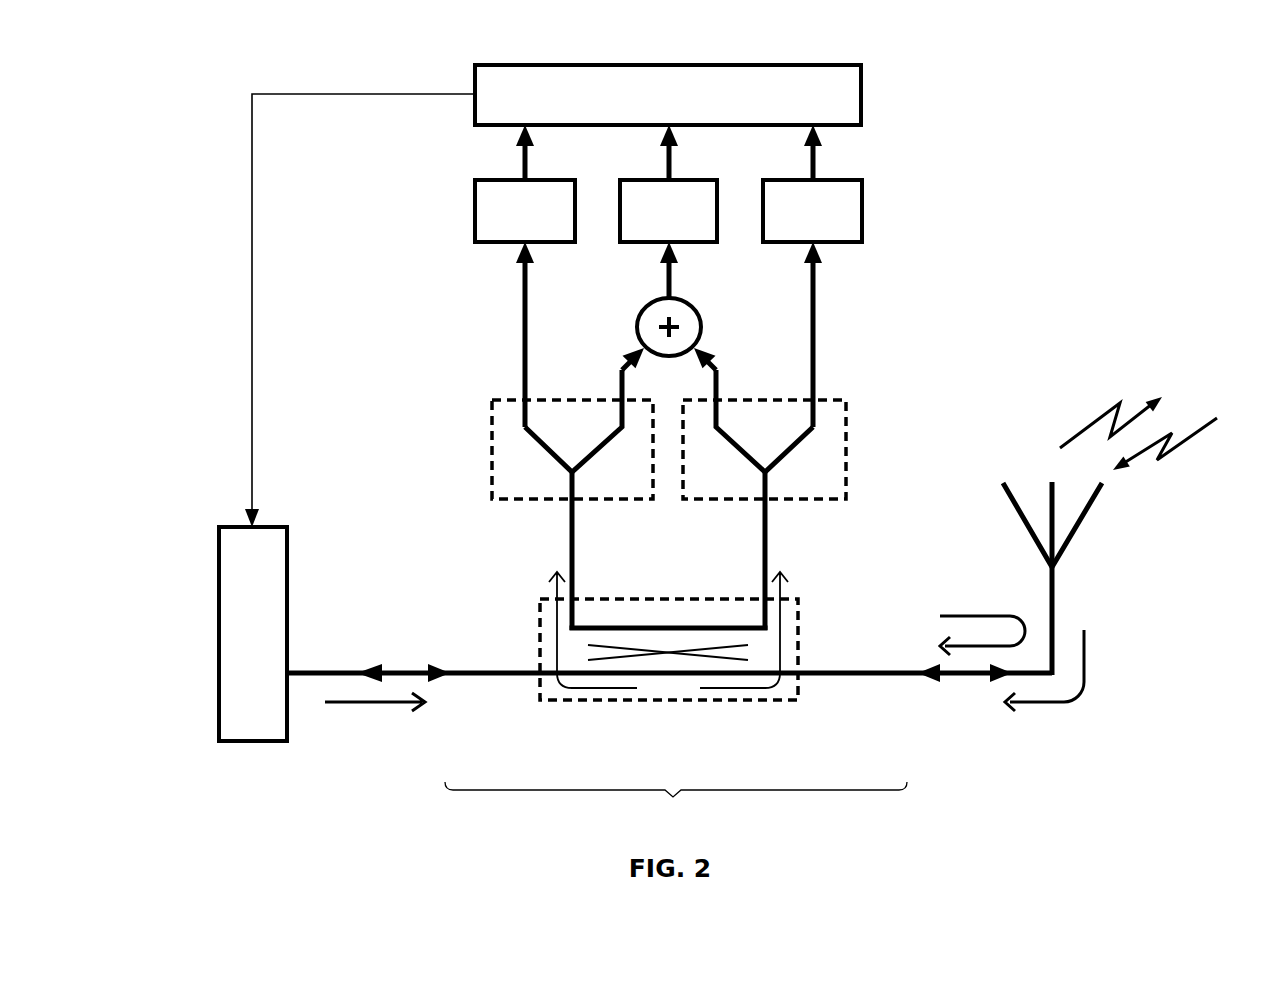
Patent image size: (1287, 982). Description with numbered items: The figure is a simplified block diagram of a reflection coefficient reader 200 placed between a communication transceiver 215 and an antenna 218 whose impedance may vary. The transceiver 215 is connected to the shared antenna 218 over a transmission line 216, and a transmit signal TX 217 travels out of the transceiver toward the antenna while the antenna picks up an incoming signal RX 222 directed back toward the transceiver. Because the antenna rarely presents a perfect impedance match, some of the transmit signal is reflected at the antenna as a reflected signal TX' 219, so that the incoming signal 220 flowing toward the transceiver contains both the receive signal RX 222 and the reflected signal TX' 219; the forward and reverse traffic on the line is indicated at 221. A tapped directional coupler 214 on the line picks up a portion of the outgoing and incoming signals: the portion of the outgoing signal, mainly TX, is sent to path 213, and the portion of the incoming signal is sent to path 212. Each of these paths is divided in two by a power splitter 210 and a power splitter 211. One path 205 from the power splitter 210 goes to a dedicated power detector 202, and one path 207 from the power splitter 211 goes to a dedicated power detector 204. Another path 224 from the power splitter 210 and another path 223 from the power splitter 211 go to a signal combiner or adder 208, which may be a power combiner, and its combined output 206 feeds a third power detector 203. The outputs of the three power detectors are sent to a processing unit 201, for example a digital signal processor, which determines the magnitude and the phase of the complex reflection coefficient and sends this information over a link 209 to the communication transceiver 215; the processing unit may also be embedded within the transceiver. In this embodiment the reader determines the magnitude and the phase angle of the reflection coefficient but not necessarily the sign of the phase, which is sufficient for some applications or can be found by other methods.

The reflection coefficient reader 200 is at (676, 807).
The processing unit 201 is at (861, 85).
The power detector 202 is at (475, 203).
The power detector 203 is at (718, 241).
The power detector 204 is at (862, 202).
The path 205 is at (522, 288).
The summed signal line 206 is at (663, 278).
The path 207 is at (813, 285).
The signal combiner 208 is at (637, 328).
The control line 209 is at (253, 327).
The power splitter 210 is at (492, 481).
The power splitter 211 is at (846, 472).
The path 212 is at (572, 530).
The path 213 is at (765, 532).
The tapped directional coupler 214 is at (553, 700).
The communication transceiver 215 is at (287, 543).
The transmission line 216 is at (410, 667).
The transmit signal TX 217 is at (333, 702).
The antenna 218 is at (998, 478).
The reflected signal TX' 219 is at (942, 615).
The incoming signal 220 is at (908, 667).
The forward signal path 221 is at (963, 682).
The incoming signal RX 222 is at (1045, 702).
The path 223 is at (716, 380).
The path 224 is at (622, 380).